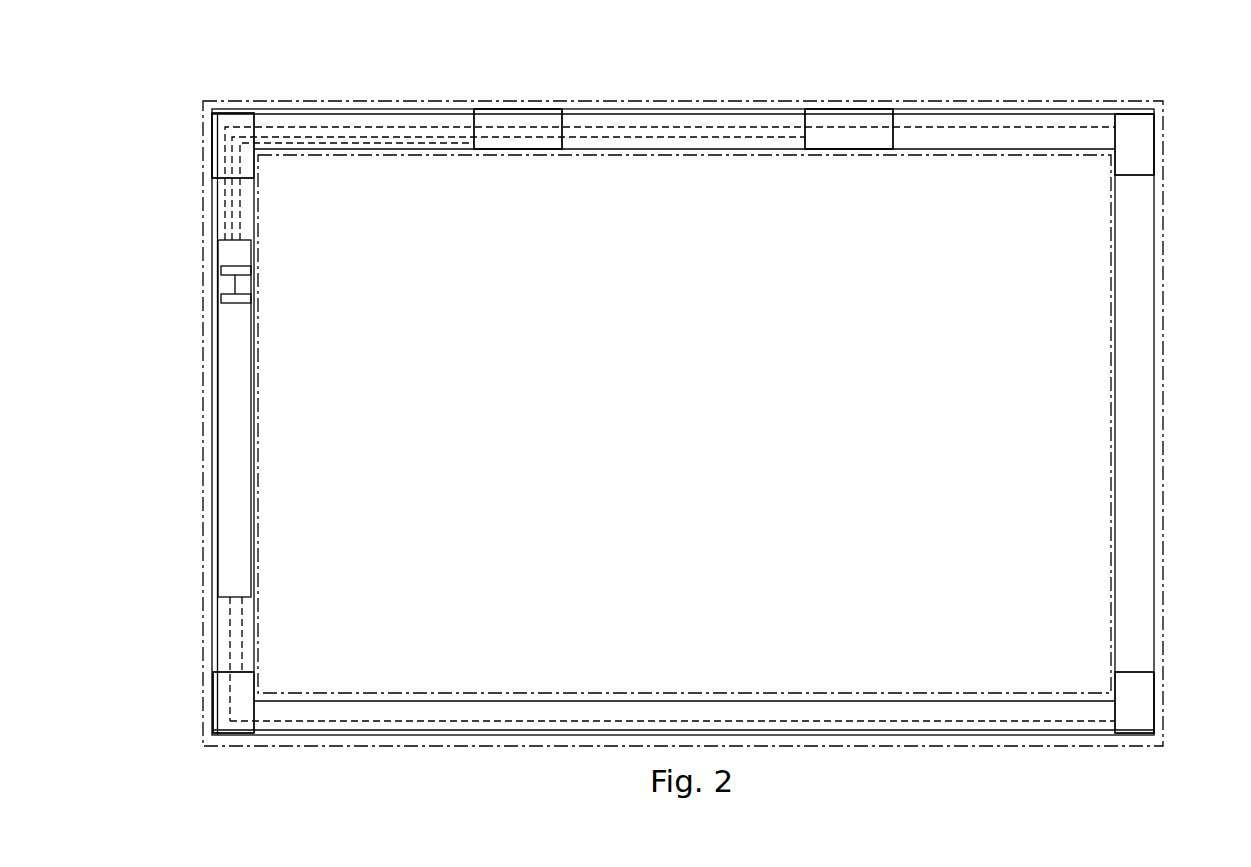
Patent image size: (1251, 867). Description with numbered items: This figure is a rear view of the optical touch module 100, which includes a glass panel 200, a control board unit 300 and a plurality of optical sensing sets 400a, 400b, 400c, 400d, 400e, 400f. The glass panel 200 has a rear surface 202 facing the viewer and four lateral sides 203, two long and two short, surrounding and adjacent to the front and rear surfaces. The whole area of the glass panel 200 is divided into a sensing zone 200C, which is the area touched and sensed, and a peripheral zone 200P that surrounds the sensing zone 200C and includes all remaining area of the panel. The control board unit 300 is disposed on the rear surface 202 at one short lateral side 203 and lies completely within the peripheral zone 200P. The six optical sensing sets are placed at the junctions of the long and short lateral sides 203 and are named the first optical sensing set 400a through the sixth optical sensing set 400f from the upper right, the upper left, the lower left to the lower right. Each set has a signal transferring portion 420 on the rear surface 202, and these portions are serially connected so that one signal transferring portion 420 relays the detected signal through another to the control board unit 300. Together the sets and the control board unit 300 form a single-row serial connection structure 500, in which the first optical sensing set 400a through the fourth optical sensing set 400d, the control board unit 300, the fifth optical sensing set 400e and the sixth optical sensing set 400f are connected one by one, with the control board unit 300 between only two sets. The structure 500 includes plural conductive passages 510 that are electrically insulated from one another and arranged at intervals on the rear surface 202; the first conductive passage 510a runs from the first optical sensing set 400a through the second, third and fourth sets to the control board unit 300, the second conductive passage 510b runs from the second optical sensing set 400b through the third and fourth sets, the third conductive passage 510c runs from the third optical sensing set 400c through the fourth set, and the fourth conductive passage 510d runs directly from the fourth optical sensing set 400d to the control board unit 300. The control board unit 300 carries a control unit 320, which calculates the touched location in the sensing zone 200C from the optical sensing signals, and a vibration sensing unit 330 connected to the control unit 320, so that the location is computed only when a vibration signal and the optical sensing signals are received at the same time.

The optical touch module 100 is at (148, 58).
The glass panel 200 is at (198, 110).
The peripheral zone 200P is at (250, 96).
The sensing zone 200C is at (334, 705).
The rear surface 202 is at (1078, 312).
The lateral sides 203 is at (1155, 204).
The control board unit 300 is at (204, 413).
The control unit 320 is at (222, 270).
The vibration sensing unit 330 is at (222, 298).
The first optical sensing set 400a is at (1140, 96).
The second optical sensing set 400b is at (840, 95).
The third optical sensing set 400c is at (493, 95).
The fourth optical sensing set 400d is at (198, 138).
The fifth optical sensing set 400e is at (200, 707).
The sixth optical sensing set 400f is at (1122, 750).
The signal transferring portion 420 is at (212, 163).
The single-row serial connection structure 500 is at (642, 95).
The conductive passages 510 is at (241, 227).
The first conductive passage 510a is at (1000, 127).
The second conductive passage 510b is at (748, 137).
The third conductive passage 510c is at (385, 143).
The fourth conductive passage 510d is at (236, 193).